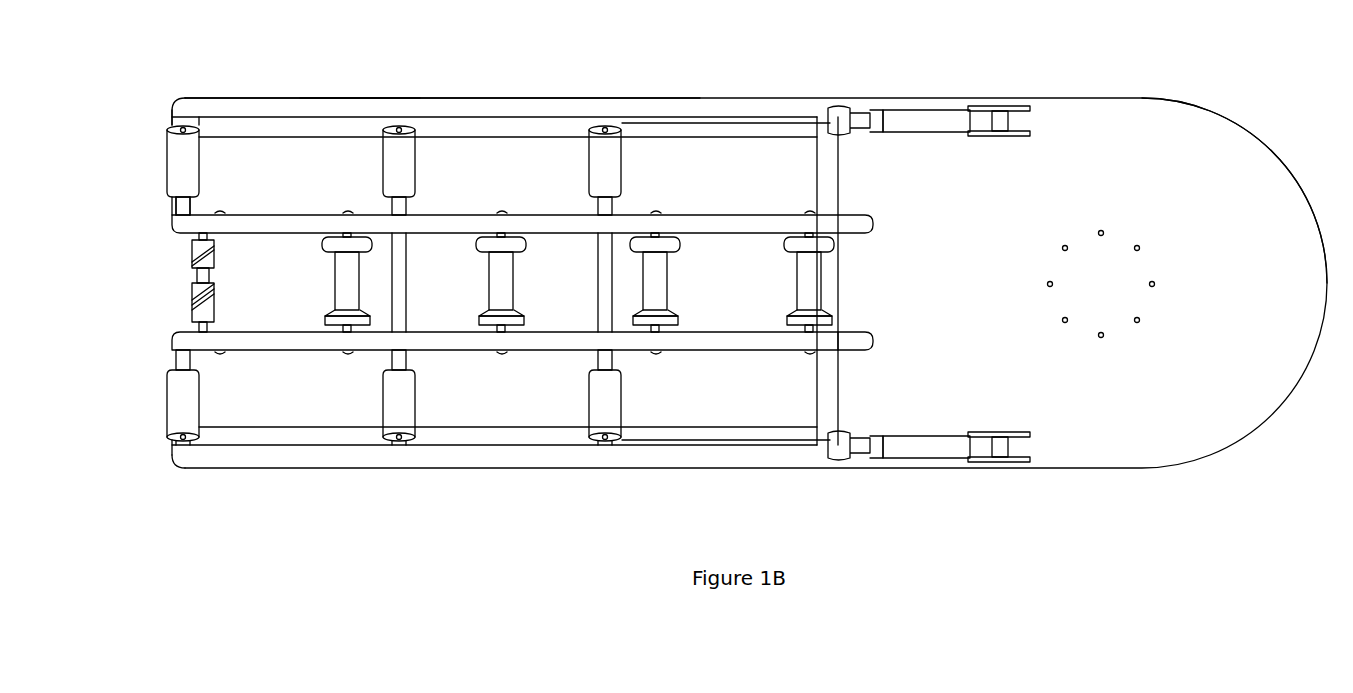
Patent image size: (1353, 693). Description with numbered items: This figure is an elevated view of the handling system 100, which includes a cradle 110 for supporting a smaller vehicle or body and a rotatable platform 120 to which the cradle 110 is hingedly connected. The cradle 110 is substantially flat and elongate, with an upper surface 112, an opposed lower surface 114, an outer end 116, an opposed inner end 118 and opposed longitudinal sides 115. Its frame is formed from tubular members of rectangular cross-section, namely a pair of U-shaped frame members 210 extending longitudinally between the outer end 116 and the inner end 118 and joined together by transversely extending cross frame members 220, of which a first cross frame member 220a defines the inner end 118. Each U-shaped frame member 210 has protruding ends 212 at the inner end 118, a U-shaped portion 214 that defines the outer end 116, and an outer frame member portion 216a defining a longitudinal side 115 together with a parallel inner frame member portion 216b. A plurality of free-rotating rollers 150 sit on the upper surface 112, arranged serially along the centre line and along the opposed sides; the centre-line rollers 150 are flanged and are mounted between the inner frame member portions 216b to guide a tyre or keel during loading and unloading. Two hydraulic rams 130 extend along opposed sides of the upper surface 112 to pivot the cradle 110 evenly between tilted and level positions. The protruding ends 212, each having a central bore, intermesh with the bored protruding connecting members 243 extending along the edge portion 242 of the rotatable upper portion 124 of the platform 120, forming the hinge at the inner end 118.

The handling system 100 is at (1230, 55).
The cradle 110 is at (122, 148).
The upper surface 112 is at (697, 160).
The lower surface 114 is at (531, 98).
The longitudinal sides 115 is at (427, 98).
The outer end 116 is at (170, 198).
The inner end 118 is at (832, 172).
The rotatable platform 120 is at (1238, 398).
The rotatable upper portion 124 is at (1245, 138).
The hydraulic rams 130 is at (933, 123).
The rollers 150 is at (398, 160).
The U-shaped frame members 210 is at (268, 348).
The protruding ends 212 is at (862, 345).
The U-shaped portion 214 is at (170, 442).
The outer frame member portion 216a is at (468, 458).
The inner frame member portion 216b is at (455, 345).
The cross frame members 220 is at (395, 358).
The first cross frame member 220a is at (832, 413).
The edge portion 242 is at (812, 393).
The protruding connecting members 243 is at (850, 272).